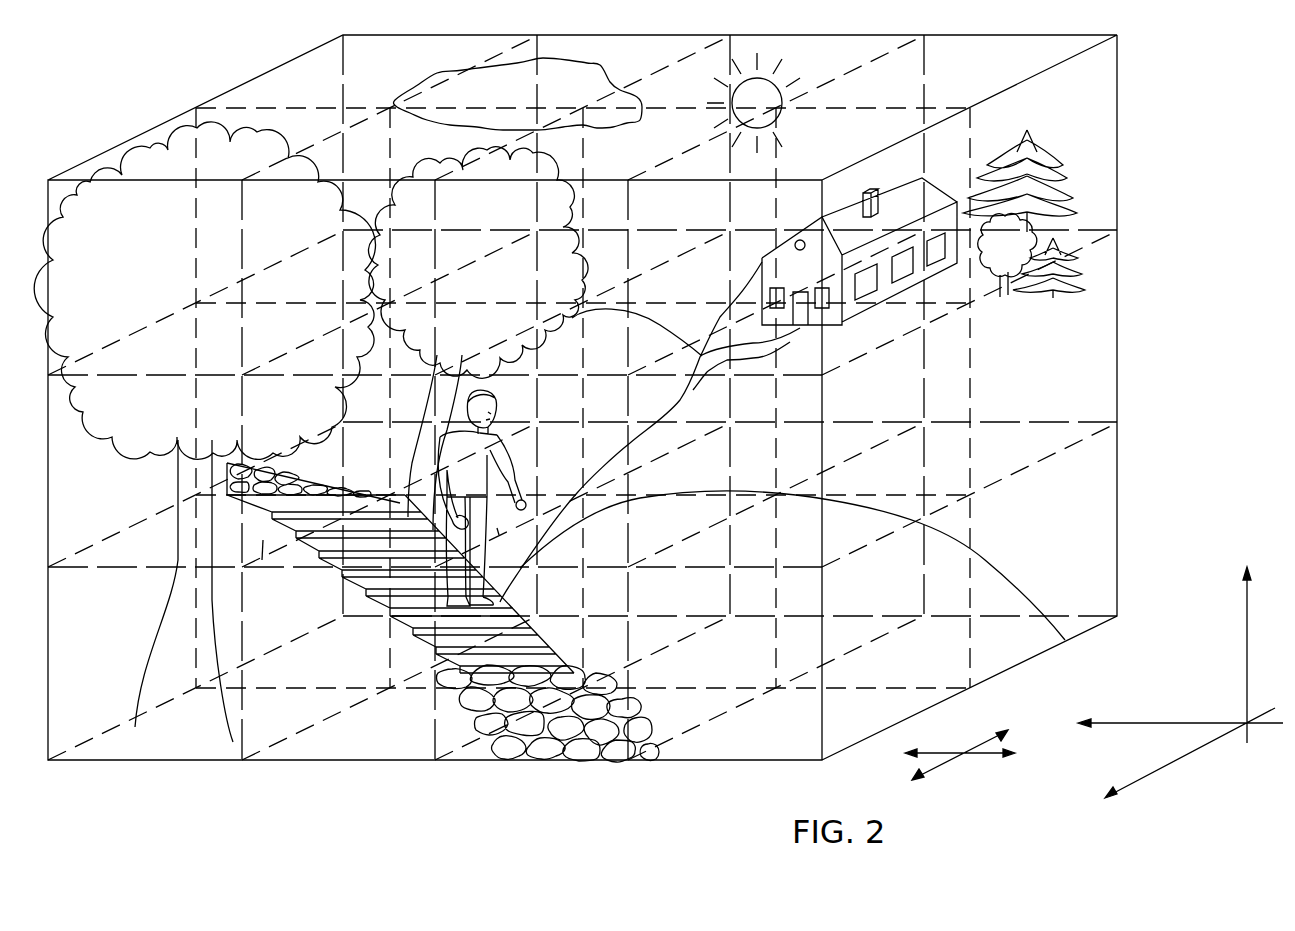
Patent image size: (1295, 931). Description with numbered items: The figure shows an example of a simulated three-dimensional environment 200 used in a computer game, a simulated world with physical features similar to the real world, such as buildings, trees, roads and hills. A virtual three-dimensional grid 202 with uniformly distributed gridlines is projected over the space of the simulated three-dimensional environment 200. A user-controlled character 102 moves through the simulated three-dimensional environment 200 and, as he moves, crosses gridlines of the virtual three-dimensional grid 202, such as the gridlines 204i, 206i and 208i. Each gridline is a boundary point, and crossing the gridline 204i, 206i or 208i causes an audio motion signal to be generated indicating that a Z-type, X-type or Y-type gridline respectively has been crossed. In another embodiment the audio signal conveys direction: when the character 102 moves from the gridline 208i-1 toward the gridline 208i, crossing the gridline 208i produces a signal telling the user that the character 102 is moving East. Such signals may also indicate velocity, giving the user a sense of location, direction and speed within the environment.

The simulated 3D environment 200 is at (658, 434).
The virtual 3D grid 202 is at (1130, 90).
The character 102 is at (470, 397).
The gridline 204i is at (380, 592).
The gridline 206i is at (615, 497).
The gridline 208i is at (497, 528).
The gridline 208i-1 is at (263, 540).